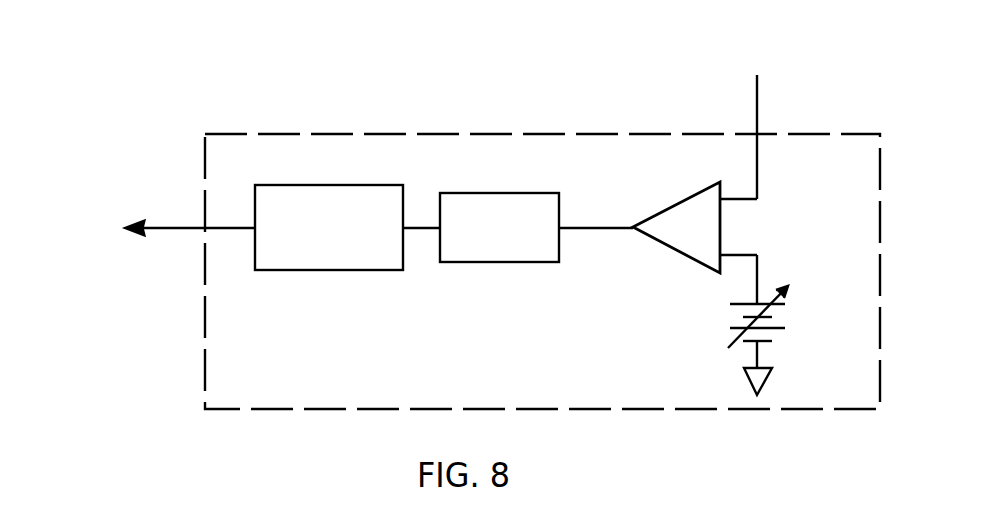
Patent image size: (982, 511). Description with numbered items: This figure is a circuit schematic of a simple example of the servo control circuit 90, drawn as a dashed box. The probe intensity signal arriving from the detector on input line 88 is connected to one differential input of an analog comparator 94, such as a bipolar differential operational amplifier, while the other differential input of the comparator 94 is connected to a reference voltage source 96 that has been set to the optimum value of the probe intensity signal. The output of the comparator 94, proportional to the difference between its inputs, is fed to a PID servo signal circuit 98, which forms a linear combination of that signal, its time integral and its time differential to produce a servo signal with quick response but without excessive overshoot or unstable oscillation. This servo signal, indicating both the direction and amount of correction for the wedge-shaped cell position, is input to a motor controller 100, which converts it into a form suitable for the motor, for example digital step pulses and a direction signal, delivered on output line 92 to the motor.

The input from detector 88 is at (757, 118).
The servo control circuit 90 is at (385, 135).
The output to motor 92 is at (157, 230).
The analog comparator 94 is at (670, 217).
The reference voltage source 96 is at (773, 335).
The PID servo signal circuit 98 is at (472, 202).
The motor controller 100 is at (287, 192).